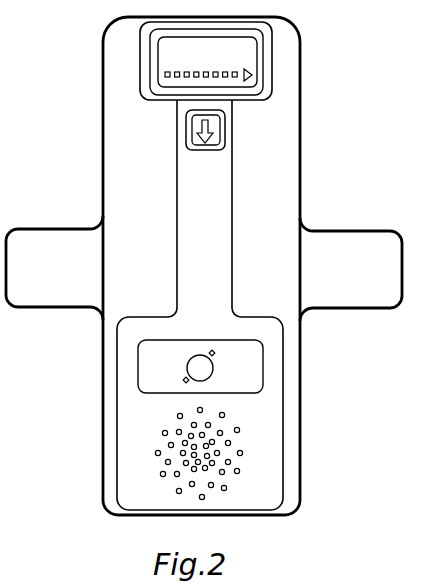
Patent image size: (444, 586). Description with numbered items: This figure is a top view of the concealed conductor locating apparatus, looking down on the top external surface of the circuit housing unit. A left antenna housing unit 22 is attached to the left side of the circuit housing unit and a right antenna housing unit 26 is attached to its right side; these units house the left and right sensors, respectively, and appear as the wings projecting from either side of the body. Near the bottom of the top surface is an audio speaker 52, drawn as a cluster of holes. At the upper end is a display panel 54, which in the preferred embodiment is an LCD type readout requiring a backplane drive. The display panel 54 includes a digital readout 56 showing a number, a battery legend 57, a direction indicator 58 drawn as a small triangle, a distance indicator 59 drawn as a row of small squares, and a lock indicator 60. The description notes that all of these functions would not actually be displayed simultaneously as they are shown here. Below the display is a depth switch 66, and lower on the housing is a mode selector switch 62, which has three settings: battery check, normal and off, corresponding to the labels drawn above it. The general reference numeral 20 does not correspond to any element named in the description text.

The housing body 20 is at (201, 266).
The left antenna housing unit 22 is at (46, 232).
The right antenna housing unit 26 is at (337, 233).
The audio speaker 52 is at (240, 430).
The display panel 54 is at (272, 73).
The digital readout 56 is at (238, 51).
The battery legend 57 is at (165, 88).
The direction indicator 58 is at (250, 80).
The distance indicator 59 is at (165, 73).
The lock indicator 60 is at (236, 85).
The mode selector switch 62 is at (210, 382).
The depth switch 66 is at (194, 150).